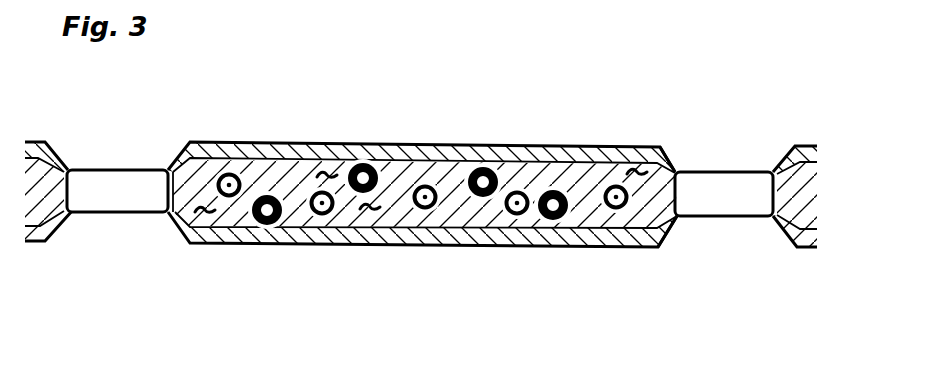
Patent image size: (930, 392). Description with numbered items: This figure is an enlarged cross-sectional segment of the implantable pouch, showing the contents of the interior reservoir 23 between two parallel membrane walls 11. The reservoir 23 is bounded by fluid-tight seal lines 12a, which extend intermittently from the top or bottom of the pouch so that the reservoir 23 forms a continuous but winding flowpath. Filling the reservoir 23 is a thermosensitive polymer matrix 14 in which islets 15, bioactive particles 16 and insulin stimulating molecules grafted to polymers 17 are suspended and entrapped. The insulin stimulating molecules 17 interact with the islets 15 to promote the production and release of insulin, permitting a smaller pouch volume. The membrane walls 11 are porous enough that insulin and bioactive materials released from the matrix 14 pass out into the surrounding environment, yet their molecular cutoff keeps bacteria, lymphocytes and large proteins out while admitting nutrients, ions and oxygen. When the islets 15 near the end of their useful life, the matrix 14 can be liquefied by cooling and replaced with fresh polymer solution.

The membrane walls 11 is at (568, 156).
The parallel seal lines 12a is at (725, 172).
The polymer matrix 14 is at (668, 226).
The islets 15 is at (553, 221).
The bioactive particles 16 is at (243, 172).
The insulin stimulating molecules grafted to polymers 17 is at (358, 215).
The interior reservoir 23 is at (401, 175).